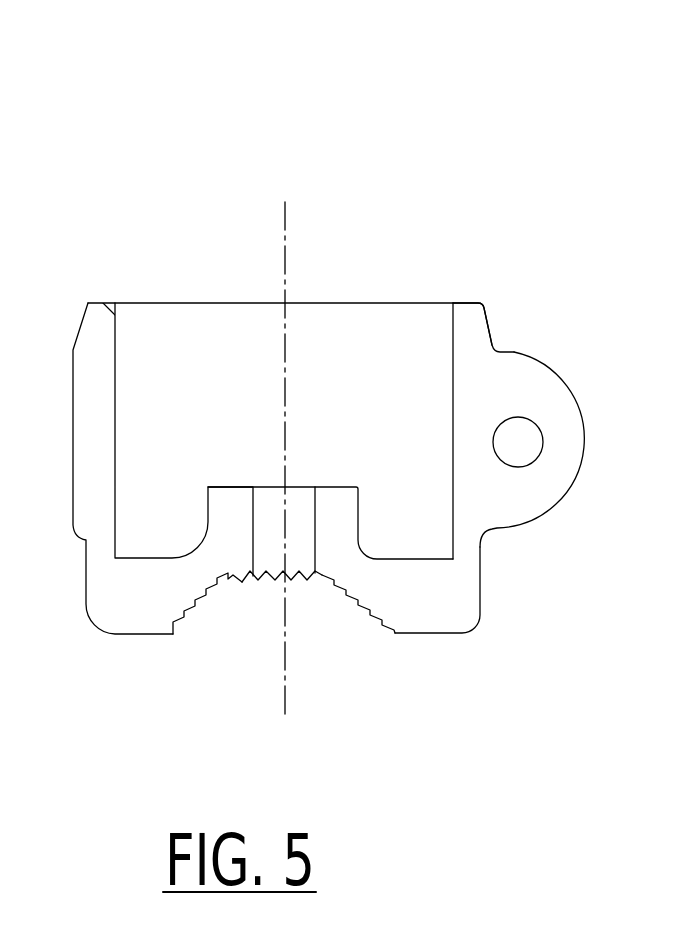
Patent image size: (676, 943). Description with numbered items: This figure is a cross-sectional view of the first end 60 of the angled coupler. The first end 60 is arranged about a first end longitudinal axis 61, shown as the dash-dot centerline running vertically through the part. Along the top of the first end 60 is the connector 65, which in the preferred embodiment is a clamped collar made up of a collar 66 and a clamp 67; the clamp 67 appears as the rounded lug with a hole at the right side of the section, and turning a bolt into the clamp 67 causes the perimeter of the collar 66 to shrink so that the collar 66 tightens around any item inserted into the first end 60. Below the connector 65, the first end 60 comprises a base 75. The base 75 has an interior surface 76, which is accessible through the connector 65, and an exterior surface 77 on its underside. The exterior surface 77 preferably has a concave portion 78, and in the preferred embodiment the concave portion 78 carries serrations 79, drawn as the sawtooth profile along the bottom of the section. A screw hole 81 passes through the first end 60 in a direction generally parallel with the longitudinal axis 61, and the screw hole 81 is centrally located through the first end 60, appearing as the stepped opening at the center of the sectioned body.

The first end 60 is at (343, 186).
The first end longitudinal axis 61 is at (285, 260).
The connector 65 is at (467, 303).
The collar 66 is at (453, 330).
The clamp 67 is at (517, 352).
The base 75 is at (480, 575).
The interior surface 76 is at (322, 487).
The exterior surface 77 is at (397, 637).
The concave portion 78 is at (360, 603).
The serrations 79 is at (239, 590).
The screw hole 81 is at (262, 487).